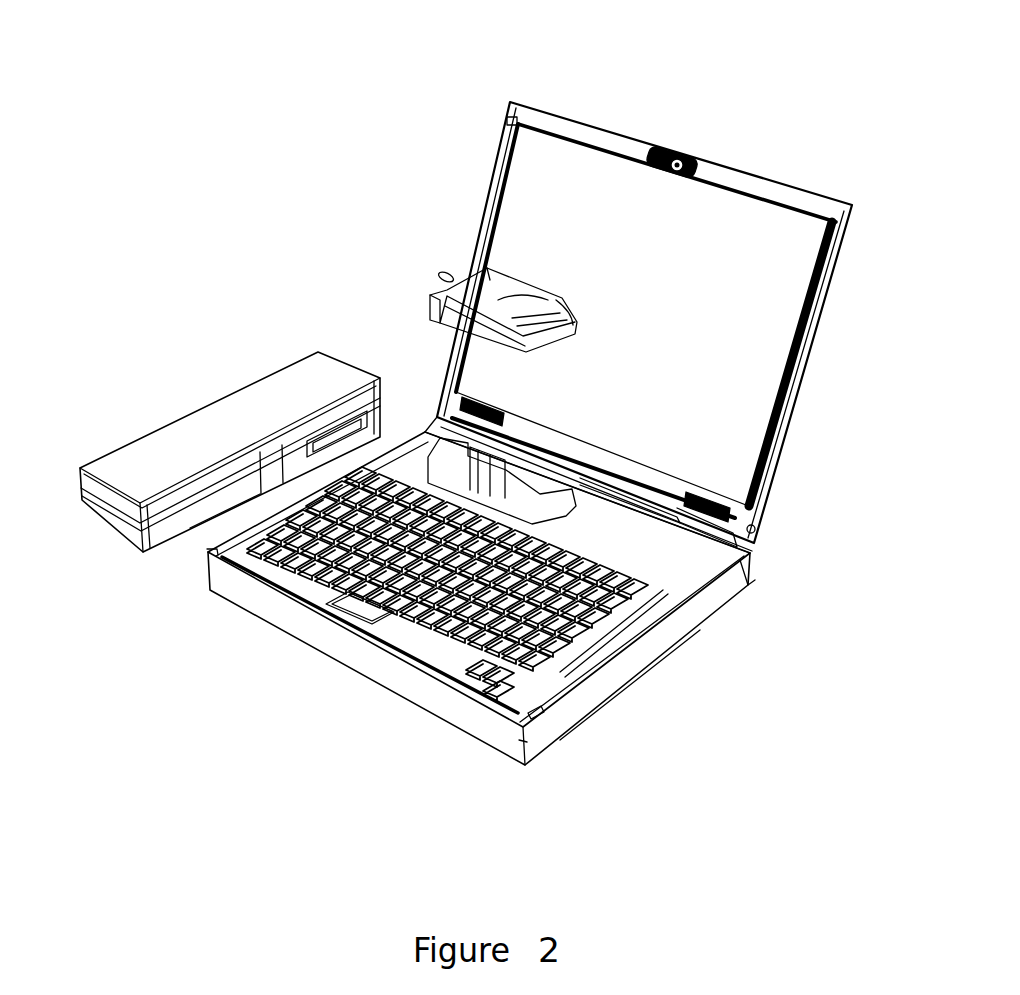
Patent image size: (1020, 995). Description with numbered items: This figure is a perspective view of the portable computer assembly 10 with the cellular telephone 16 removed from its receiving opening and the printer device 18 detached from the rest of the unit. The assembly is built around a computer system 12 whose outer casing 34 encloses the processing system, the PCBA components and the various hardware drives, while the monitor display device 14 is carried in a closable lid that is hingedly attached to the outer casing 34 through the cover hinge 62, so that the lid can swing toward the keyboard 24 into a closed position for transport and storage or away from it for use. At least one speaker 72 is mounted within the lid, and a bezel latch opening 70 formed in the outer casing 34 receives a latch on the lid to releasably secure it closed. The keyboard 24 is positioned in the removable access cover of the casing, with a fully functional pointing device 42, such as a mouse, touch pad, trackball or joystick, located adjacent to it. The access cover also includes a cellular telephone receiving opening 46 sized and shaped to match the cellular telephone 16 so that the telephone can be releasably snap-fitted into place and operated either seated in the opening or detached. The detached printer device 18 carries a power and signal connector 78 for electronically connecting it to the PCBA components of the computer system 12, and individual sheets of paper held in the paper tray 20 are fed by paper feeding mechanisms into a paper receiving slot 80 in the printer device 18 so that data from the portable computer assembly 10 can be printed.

The portable computer assembly 10 is at (427, 118).
The computer system 12 is at (433, 668).
The monitor display device 14 is at (738, 355).
The cellular telephone 16 is at (477, 292).
The printer device 18 is at (225, 427).
The paper tray 20 is at (640, 673).
The keyboard 24 is at (290, 557).
The outer casing 34 is at (745, 575).
The pointing device 42 is at (360, 618).
The cellular telephone receiving opening 46 is at (507, 497).
The cover hinge 62 is at (755, 523).
The bezel latch opening 70 is at (530, 718).
The speaker 72 is at (727, 490).
The power and signal connector 78 is at (352, 420).
The paper receiving slot 80 is at (227, 512).